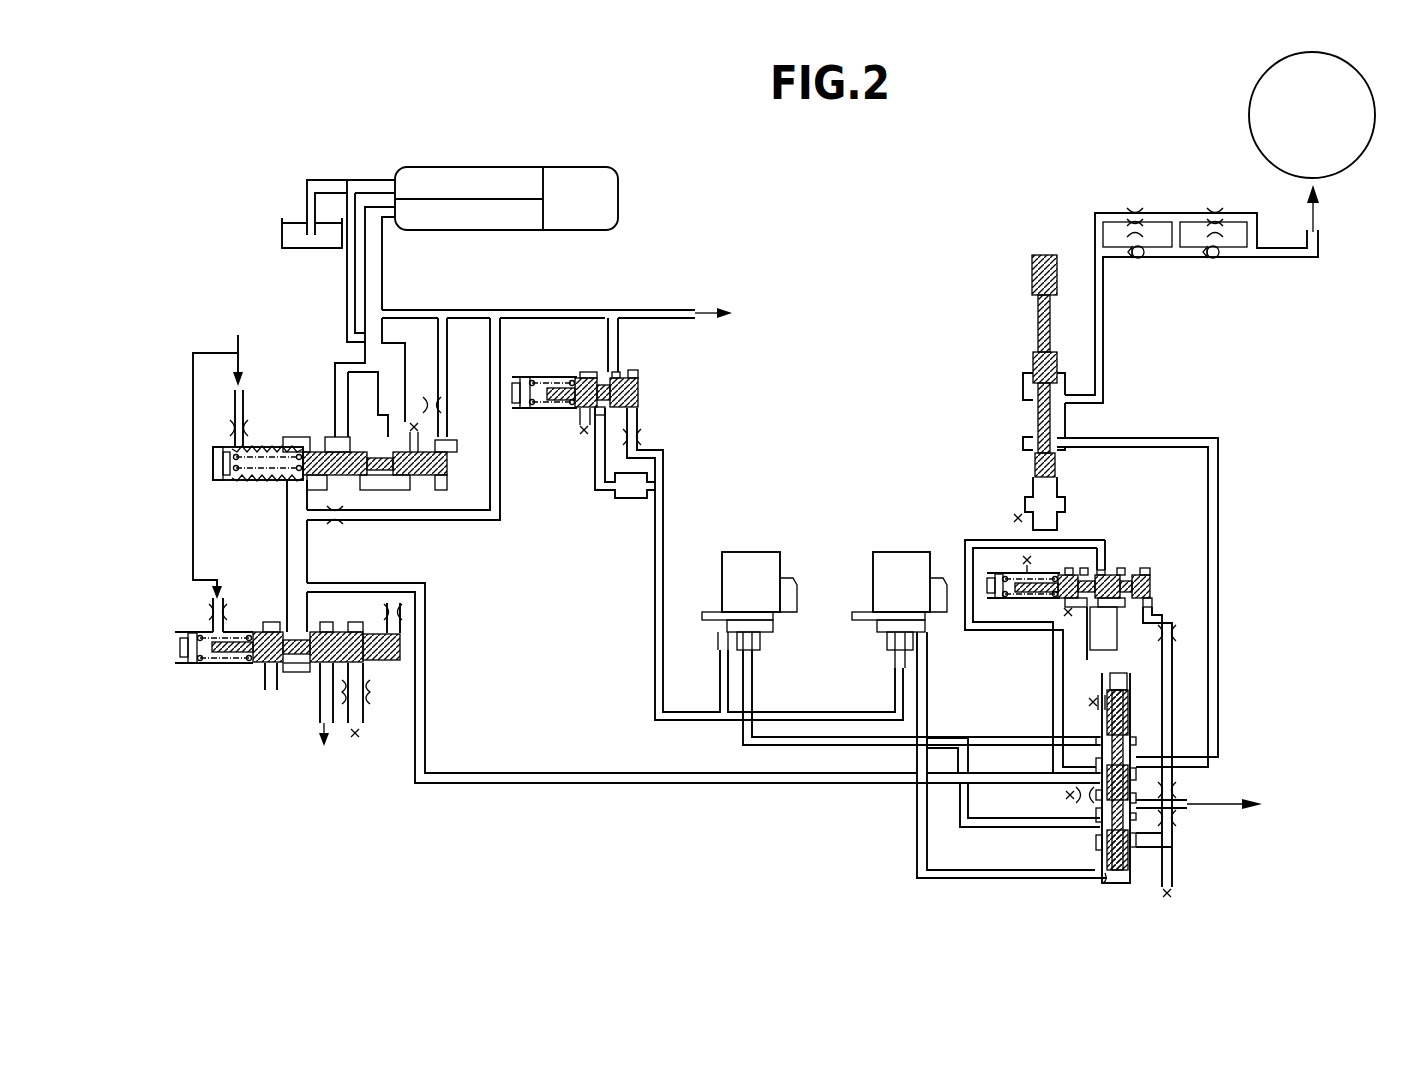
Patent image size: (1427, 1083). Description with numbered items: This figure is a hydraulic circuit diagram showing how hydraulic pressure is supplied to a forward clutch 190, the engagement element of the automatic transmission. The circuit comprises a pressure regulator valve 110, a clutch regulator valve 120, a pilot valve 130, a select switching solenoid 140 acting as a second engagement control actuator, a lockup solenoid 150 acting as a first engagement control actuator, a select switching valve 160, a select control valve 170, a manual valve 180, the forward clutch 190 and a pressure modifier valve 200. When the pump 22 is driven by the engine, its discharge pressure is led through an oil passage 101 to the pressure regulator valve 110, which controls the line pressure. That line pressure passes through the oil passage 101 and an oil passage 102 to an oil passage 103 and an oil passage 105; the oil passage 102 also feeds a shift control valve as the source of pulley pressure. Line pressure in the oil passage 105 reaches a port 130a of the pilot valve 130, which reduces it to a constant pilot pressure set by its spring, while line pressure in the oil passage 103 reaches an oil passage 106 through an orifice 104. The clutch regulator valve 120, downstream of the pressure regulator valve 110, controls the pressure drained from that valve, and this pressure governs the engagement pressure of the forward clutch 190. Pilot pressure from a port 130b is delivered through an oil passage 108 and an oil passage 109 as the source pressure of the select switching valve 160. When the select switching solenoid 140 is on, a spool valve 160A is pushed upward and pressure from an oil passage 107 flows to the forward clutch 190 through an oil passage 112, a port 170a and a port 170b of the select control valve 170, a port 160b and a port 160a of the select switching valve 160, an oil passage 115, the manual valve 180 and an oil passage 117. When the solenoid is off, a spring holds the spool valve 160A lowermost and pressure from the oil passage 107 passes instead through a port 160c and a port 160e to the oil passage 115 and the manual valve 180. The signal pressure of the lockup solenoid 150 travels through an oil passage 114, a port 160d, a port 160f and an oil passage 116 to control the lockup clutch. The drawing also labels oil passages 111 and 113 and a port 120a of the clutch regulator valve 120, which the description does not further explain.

The pump 22 is at (590, 168).
The oil passage 101 is at (382, 265).
The oil passage 102 is at (480, 310).
The oil passage 103 is at (493, 508).
The orifice 104 is at (342, 538).
The oil passage 105 is at (620, 352).
The oil passage 106 is at (285, 545).
The oil passage 107 is at (425, 695).
The oil passage 108 is at (655, 625).
The oil passage 109 is at (890, 697).
The pressure regulator valve 110 is at (433, 484).
The line 111 is at (917, 832).
The oil passage 112 is at (1052, 690).
The line 113 is at (1093, 706).
The oil passage 114 is at (945, 737).
The oil passage 115 is at (1218, 687).
The oil passage 116 is at (1185, 800).
The oil passage 117 is at (1103, 368).
The clutch regulator valve 120 is at (249, 682).
The port of clutch regulator valve 120a is at (285, 622).
The pilot valve 130 is at (652, 358).
The port 130a is at (597, 372).
The port 130b is at (600, 412).
The select switching solenoid 140 is at (838, 550).
The lockup solenoid 150 is at (688, 548).
The select switching valve 160 is at (1122, 784).
The spool valve 160A is at (1125, 727).
The port 160a is at (1105, 875).
The port 160b is at (1098, 740).
The port 160c is at (1096, 782).
The port 160d is at (1098, 820).
The port 160e is at (1155, 758).
The port 160f is at (1137, 810).
The select control valve 170 is at (1006, 566).
The port 170a is at (1100, 570).
The port 170b is at (1083, 608).
The manual valve 180 is at (1022, 343).
The forward clutch 190 is at (1249, 118).
The pressure modifier valve 200 is at (236, 453).